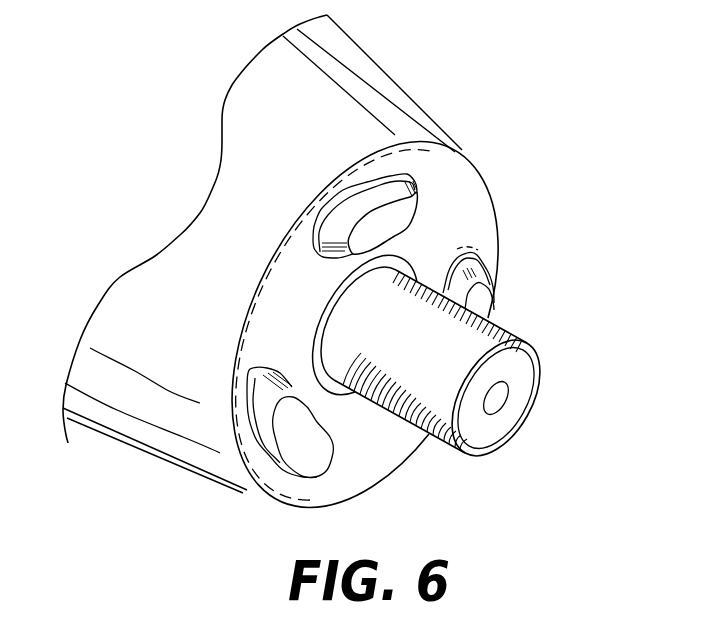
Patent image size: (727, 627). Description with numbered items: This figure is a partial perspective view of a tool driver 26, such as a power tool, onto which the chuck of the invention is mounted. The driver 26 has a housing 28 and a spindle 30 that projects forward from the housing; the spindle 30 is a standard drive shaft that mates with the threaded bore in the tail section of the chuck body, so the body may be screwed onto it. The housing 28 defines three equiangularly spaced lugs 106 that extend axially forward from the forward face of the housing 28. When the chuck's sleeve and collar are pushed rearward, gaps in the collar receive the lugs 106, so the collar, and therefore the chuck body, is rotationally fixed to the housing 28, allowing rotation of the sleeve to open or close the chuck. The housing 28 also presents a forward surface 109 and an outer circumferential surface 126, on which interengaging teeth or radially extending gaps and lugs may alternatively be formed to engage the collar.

The driver 26 is at (456, 108).
The housing 28 is at (460, 147).
The spindle 30 is at (517, 327).
The lug 106 is at (420, 200).
The forward surface 109 is at (493, 255).
The outer circumferential surface 126 is at (357, 128).